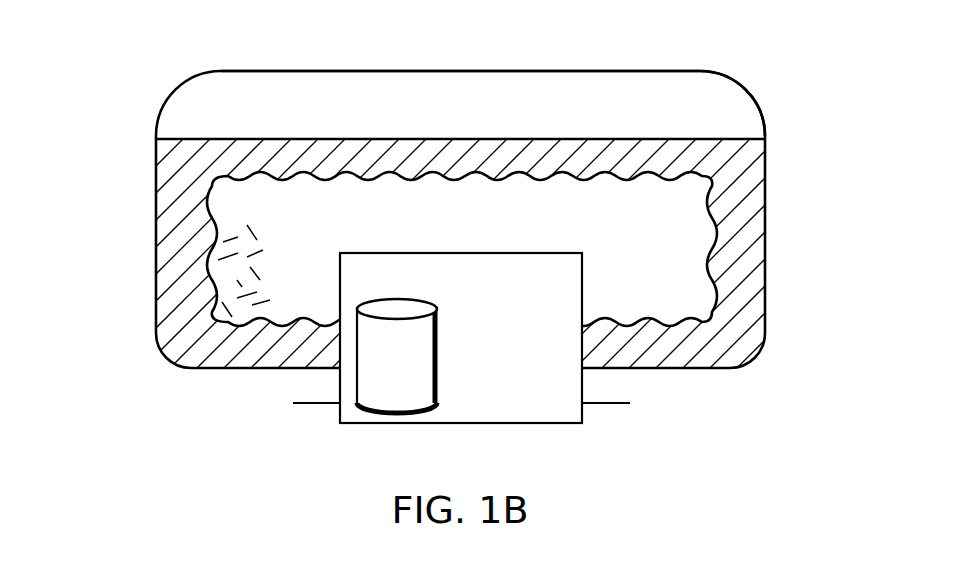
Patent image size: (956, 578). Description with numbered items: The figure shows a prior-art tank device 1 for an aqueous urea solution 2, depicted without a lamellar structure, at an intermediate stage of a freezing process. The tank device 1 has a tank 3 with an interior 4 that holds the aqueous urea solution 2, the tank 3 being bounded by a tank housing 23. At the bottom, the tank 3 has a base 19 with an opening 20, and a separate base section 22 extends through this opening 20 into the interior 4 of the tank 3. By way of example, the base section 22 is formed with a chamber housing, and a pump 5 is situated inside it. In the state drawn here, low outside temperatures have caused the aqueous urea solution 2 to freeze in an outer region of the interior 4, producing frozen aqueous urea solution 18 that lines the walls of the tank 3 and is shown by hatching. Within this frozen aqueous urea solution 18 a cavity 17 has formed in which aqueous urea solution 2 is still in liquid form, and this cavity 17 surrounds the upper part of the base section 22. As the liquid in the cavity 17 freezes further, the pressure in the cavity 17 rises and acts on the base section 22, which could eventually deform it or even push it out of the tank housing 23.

The tank device 1 is at (126, 56).
The aqueous urea solution 2 is at (228, 268).
The tank 3 is at (278, 71).
The interior 4 is at (348, 104).
The pump 5 is at (438, 355).
The cavity 17 is at (675, 234).
The frozen aqueous urea solution 18 is at (180, 208).
The base 19 is at (653, 369).
The opening 20 is at (328, 347).
The base section 22 is at (460, 253).
The tank housing 23 is at (747, 91).